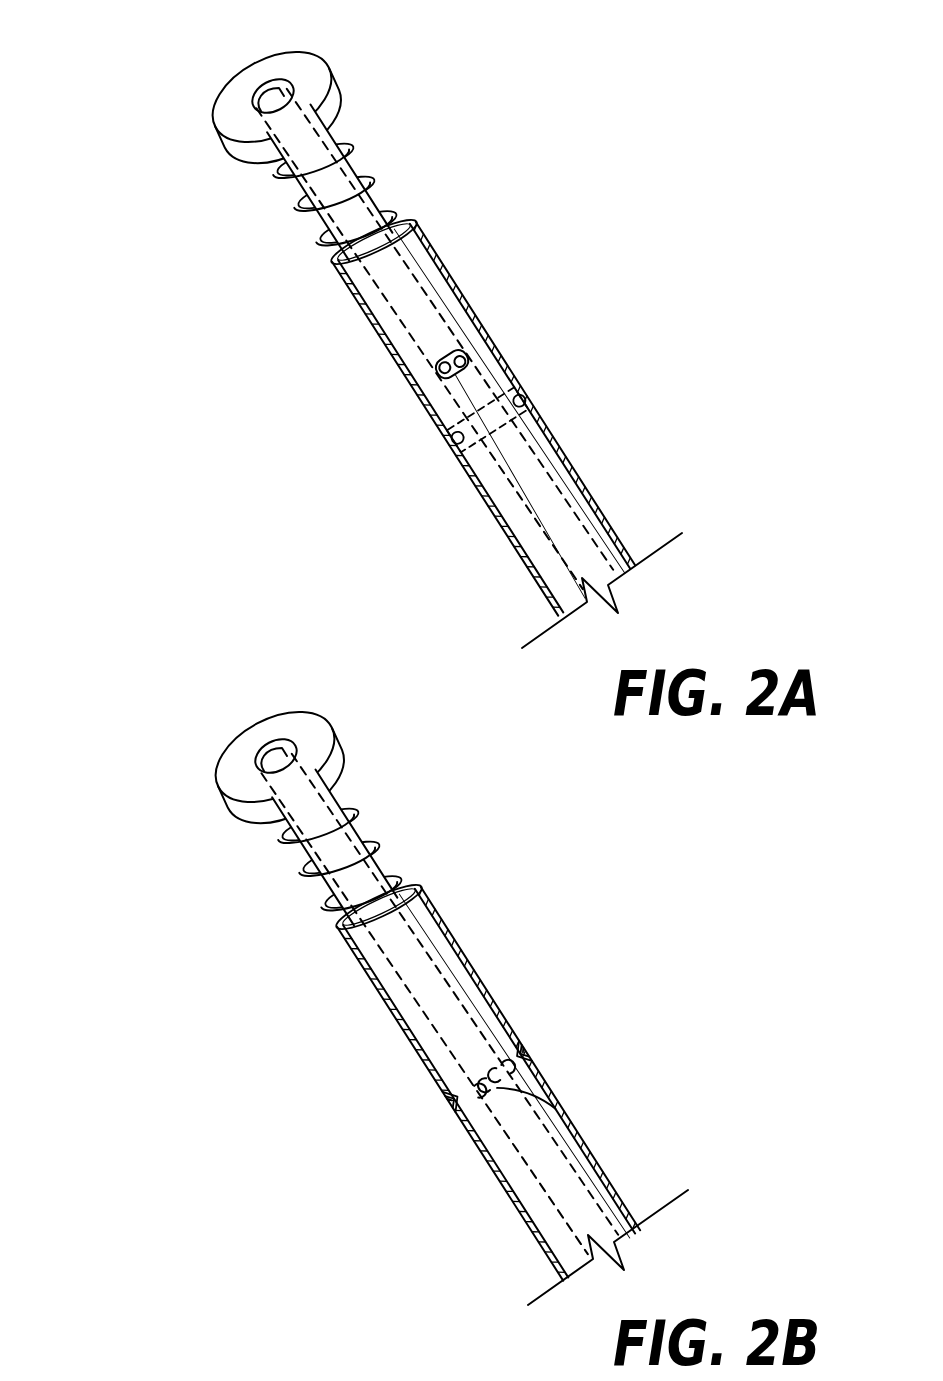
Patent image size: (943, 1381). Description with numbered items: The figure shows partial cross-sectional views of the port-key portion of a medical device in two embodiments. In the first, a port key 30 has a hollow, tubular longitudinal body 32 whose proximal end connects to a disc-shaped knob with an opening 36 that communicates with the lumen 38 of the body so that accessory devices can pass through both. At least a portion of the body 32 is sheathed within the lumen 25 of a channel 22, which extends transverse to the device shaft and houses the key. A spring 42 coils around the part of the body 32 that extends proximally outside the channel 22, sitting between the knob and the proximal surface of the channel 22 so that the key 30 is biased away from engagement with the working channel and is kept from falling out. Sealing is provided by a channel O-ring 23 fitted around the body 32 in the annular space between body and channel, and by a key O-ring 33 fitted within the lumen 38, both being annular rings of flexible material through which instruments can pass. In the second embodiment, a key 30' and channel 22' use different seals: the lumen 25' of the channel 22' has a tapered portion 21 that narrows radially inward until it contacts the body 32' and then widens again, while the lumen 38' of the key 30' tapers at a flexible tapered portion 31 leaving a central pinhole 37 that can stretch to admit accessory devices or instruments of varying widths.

In FIG. 2A, the port key 30 is at (364, 327).
In FIG. 2B, the key 30' is at (367, 956).
In FIG. 2A, the opening 36 is at (266, 92).
In FIG. 2B, the opening 36 is at (270, 748).
In FIG. 2A, the body 32 is at (248, 118).
In FIG. 2B, the body 32' is at (249, 778).
In FIG. 2A, the spring 42 is at (315, 206).
In FIG. 2B, the spring 42 is at (320, 870).
In FIG. 2A, the lumen 25 is at (509, 348).
In FIG. 2B, the lumen 25' is at (514, 1014).
In FIG. 2A, the channel 22 is at (471, 410).
In FIG. 2B, the channel 22' is at (473, 1075).
In FIG. 2A, the key O-ring 33 is at (456, 364).
In FIG. 2A, the channel O-ring 23 is at (523, 398).
In FIG. 2A, the lumen 38 is at (462, 343).
In FIG. 2B, the lumen 38' is at (438, 1014).
In FIG. 2B, the tapered portion 31 is at (503, 1058).
In FIG. 2B, the pinhole 37 is at (553, 1087).
In FIG. 2B, the tapered portion 21 is at (452, 1100).